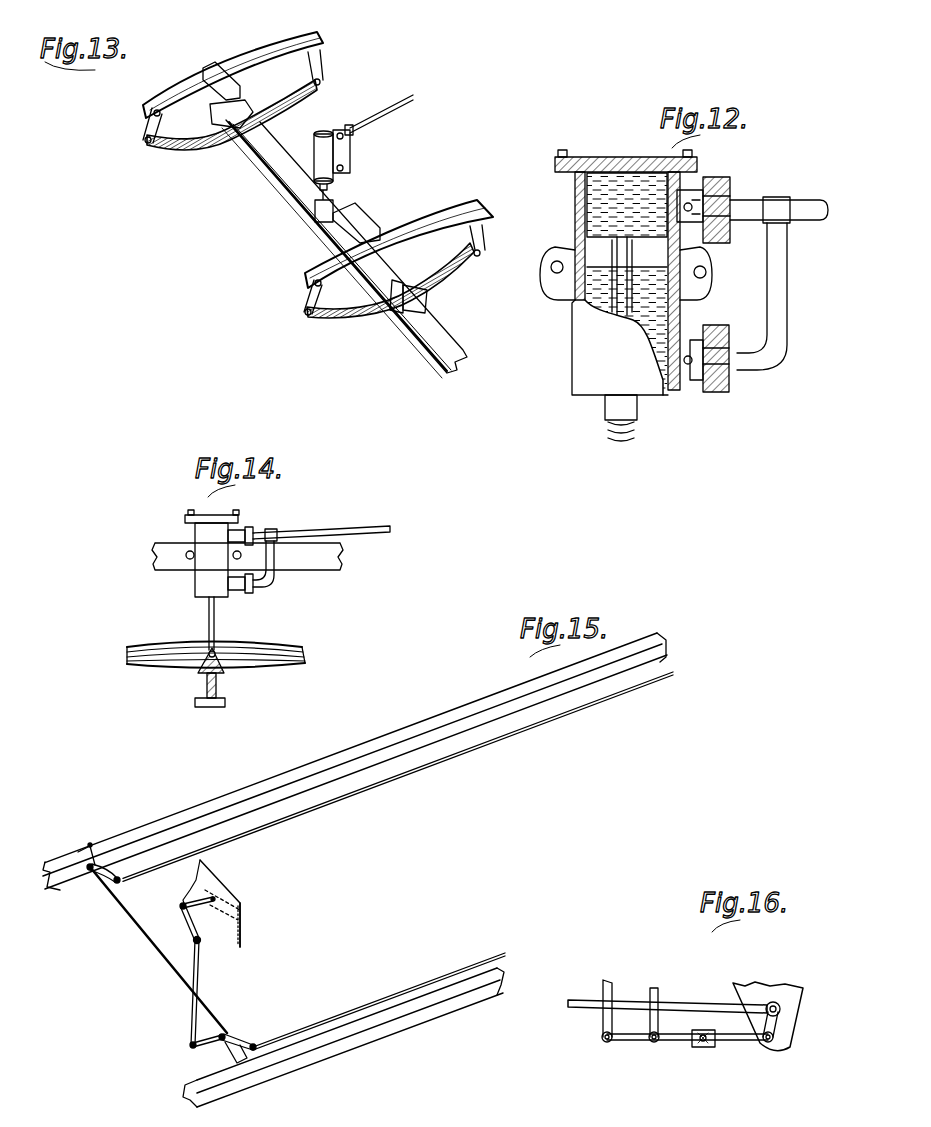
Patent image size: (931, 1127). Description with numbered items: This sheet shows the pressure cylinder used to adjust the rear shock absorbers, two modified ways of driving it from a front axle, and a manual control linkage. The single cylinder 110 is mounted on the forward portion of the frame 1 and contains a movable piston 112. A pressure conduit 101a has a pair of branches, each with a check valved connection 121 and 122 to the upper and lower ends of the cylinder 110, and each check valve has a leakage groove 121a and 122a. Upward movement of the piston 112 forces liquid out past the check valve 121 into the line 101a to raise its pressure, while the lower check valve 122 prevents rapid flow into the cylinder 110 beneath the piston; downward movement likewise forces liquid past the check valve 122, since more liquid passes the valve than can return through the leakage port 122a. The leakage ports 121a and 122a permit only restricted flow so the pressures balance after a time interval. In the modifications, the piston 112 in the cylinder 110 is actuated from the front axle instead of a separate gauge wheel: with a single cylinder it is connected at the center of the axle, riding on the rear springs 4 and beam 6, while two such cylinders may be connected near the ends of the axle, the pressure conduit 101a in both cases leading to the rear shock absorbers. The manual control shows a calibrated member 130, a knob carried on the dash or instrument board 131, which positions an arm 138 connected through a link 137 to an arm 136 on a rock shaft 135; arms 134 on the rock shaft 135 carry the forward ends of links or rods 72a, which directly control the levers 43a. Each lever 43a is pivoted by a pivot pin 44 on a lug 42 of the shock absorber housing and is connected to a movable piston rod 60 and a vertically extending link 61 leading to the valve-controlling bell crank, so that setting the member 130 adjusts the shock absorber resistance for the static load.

In FIG. 13, the frame 1 is at (255, 55).
In FIG. 14, the frame 1 is at (323, 568).
In FIG. 15, the frame 1 is at (490, 697).
In FIG. 13, the rear springs 4 is at (195, 137).
In FIG. 14, the rear springs 4 is at (158, 658).
In FIG. 13, the I-beam rail 6 is at (275, 170).
In FIG. 14, the I-beam rail 6 is at (217, 685).
In FIG. 13, the cylinder 110 is at (328, 132).
In FIG. 12, the cylinder 110 is at (580, 353).
In FIG. 14, the cylinder 110 is at (202, 577).
In FIG. 12, the piston 112 is at (607, 257).
In FIG. 13, the pressure conduit 101a is at (383, 110).
In FIG. 12, the pressure conduit 101a is at (812, 207).
In FIG. 14, the pressure conduit 101a is at (357, 527).
In FIG. 12, the check valve 121 is at (722, 190).
In FIG. 14, the check valve 121 is at (250, 528).
In FIG. 12, the leakage groove 121a is at (698, 180).
In FIG. 12, the check valve 122 is at (717, 380).
In FIG. 14, the check valve 122 is at (247, 585).
In FIG. 12, the leakage groove 122a is at (683, 377).
In FIG. 15, the links 72a is at (430, 763).
In FIG. 16, the links 72a is at (590, 1007).
In FIG. 15, the manual control member 130 is at (250, 905).
In FIG. 15, the dash or instrument board 131 is at (243, 928).
In FIG. 15, the arms 134 is at (103, 883).
In FIG. 15, the rock shaft 135 is at (173, 973).
In FIG. 15, the arm 136 is at (203, 1047).
In FIG. 15, the link 137 is at (198, 983).
In FIG. 15, the arm 138 is at (182, 905).
In FIG. 16, the piston rod 60 is at (612, 986).
In FIG. 16, the link 61 is at (658, 990).
In FIG. 16, the lug 42 is at (788, 985).
In FIG. 16, the levers 43a is at (733, 1040).
In FIG. 16, the pivot pin 44 is at (780, 1042).